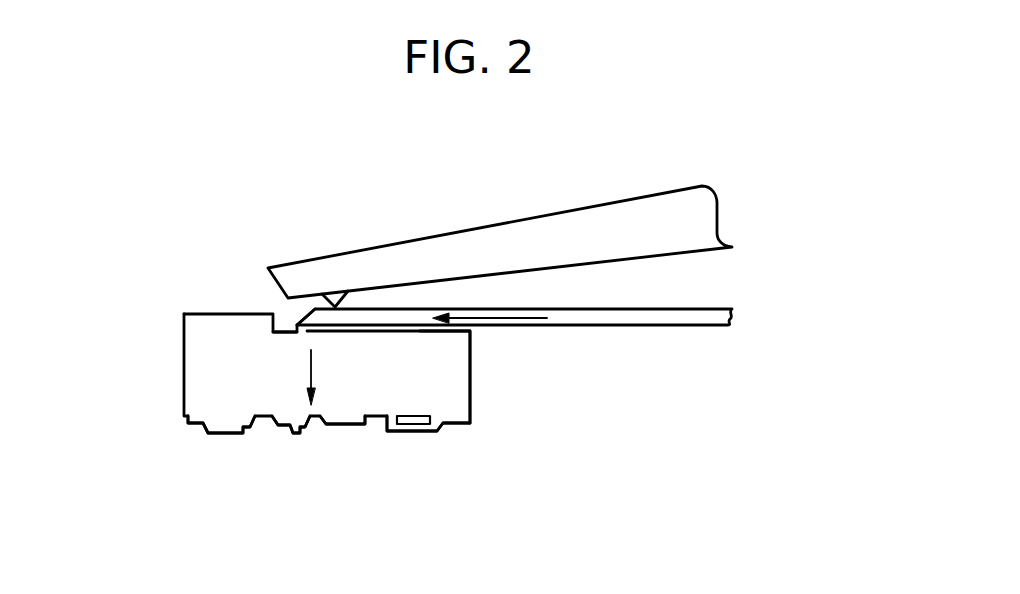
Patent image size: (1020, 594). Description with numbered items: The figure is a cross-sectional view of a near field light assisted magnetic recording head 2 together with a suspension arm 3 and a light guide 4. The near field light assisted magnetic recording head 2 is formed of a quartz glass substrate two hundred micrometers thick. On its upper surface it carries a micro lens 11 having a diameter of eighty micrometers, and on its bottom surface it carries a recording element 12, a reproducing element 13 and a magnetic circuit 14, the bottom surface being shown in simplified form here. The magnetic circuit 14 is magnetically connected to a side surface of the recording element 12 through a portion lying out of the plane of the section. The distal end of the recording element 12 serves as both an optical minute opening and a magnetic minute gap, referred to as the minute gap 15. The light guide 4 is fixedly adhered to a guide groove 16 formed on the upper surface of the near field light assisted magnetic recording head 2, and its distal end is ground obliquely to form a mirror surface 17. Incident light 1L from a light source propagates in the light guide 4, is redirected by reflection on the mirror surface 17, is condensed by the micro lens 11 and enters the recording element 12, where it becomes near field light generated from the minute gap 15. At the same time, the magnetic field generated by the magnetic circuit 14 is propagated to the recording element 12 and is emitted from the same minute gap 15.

The near field light assisted magnetic recording head 2 is at (197, 332).
The suspension arm 3 is at (483, 250).
The light guide 4 is at (602, 320).
The incident light 1L is at (312, 366).
The micro lens 11 is at (307, 332).
The recording element 12 is at (290, 433).
The reproducing element 13 is at (206, 434).
The magnetic circuit 14 is at (432, 427).
The minute gap 15 is at (313, 433).
The guide groove 16 is at (420, 331).
The mirror surface 17 is at (305, 323).